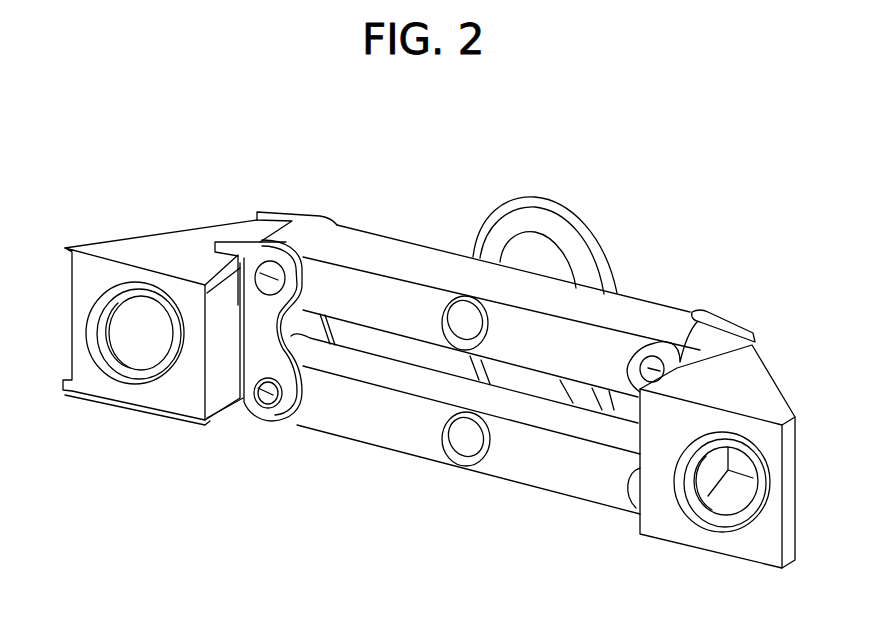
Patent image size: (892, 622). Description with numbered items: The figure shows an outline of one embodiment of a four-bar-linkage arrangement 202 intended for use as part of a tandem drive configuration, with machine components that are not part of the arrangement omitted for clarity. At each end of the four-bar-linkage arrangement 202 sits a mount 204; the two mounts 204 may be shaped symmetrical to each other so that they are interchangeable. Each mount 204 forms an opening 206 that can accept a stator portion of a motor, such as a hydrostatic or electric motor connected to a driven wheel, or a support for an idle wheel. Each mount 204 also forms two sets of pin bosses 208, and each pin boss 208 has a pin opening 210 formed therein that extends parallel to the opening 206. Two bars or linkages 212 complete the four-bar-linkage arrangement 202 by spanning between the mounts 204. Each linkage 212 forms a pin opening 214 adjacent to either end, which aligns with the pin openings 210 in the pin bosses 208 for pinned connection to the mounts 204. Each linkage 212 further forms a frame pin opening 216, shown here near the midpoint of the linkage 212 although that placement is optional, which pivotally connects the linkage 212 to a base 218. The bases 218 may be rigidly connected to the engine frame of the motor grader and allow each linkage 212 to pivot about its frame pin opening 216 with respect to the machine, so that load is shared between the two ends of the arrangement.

The four-bar-linkage arrangement 202 is at (639, 152).
The mount 204 is at (148, 252).
The opening 206 is at (144, 329).
The pin boss 208 is at (290, 402).
The pin opening 210 is at (256, 389).
The linkage 212 is at (433, 321).
The pin opening 214 is at (274, 390).
The frame pin opening 216 is at (465, 465).
The base 218 is at (534, 263).